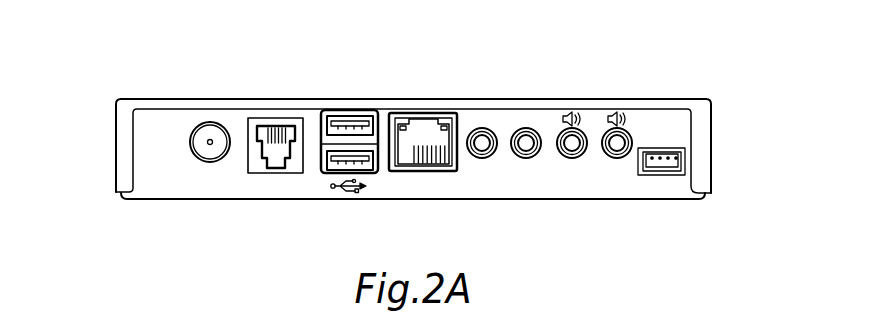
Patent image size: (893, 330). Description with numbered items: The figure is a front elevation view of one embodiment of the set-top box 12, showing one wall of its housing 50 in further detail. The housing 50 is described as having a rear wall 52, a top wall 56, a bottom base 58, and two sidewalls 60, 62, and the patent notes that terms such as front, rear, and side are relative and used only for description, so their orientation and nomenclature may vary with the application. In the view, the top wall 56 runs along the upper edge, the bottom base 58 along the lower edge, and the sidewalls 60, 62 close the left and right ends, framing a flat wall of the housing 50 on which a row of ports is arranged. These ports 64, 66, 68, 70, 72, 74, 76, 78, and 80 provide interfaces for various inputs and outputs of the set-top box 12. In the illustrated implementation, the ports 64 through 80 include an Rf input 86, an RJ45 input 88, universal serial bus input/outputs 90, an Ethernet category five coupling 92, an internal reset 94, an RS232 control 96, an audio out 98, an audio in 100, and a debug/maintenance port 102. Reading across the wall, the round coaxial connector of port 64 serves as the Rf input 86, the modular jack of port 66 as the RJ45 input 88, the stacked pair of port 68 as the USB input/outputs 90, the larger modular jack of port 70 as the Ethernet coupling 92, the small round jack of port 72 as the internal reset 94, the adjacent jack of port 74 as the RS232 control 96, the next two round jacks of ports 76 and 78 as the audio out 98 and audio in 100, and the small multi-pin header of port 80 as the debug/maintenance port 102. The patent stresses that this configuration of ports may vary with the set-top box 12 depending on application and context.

The set-top box 12 is at (121, 86).
The housing 50 is at (693, 95).
The rear wall 52 is at (152, 188).
The top wall 56 is at (180, 99).
The bottom base 58 is at (295, 200).
The sidewall 60 is at (711, 140).
The sidewall 62 is at (116, 143).
The port 64 is at (210, 126).
The port 66 is at (277, 125).
The port 68 is at (353, 115).
The port 70 is at (427, 115).
The port 72 is at (480, 128).
The port 74 is at (527, 128).
The port 76 is at (571, 128).
The port 78 is at (617, 128).
The port 80 is at (663, 176).
The Rf input 86 is at (210, 162).
The RJ45 input 88 is at (254, 173).
The universal serial bus (USB) input/outputs 90 is at (342, 170).
The Ethernet category 5 (Cat 5) coupling 92 is at (425, 171).
The internal reset 94 is at (480, 160).
The RS232 control 96 is at (525, 160).
The audio out 98 is at (572, 160).
The audio in 100 is at (617, 160).
The debug/maintenance port 102 is at (687, 165).